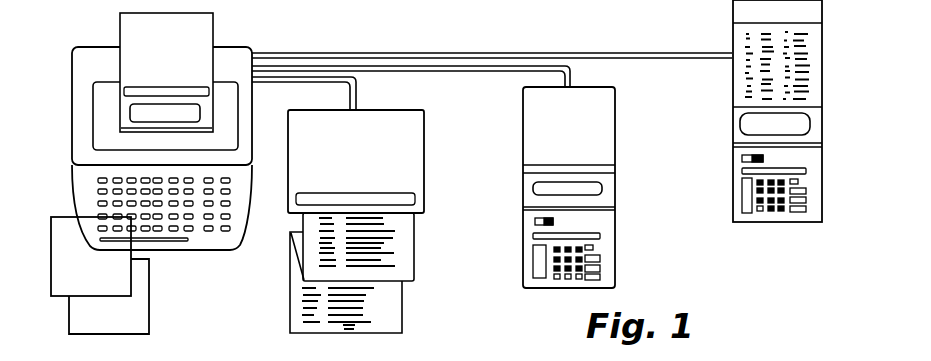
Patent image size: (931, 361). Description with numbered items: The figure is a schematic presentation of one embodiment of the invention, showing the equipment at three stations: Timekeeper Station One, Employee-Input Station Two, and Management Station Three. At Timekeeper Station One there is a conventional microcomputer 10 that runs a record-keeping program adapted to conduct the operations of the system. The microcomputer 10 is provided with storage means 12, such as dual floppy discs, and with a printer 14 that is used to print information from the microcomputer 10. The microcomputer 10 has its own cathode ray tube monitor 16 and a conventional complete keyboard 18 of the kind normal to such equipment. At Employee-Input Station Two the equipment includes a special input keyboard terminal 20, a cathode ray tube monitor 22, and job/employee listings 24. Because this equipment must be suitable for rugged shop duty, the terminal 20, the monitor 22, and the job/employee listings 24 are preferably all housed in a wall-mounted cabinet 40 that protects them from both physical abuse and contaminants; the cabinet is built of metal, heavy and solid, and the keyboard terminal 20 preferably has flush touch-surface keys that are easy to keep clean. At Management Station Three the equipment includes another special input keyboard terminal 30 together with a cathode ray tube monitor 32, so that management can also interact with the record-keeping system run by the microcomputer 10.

The microcomputer 10 is at (95, 53).
The storage means 12 is at (65, 278).
The printer 14 is at (407, 145).
The cathode ray tube monitor 16 is at (132, 113).
The keyboard 18 is at (218, 238).
The special input keyboard terminal 20 is at (802, 197).
The cathode ray tube monitor 22 is at (798, 125).
The job/employee listings 24 is at (764, 65).
The special input keyboard terminal 30 is at (600, 257).
The cathode ray tube monitor 32 is at (617, 190).
The wall-mounted cabinet 40 is at (743, 80).